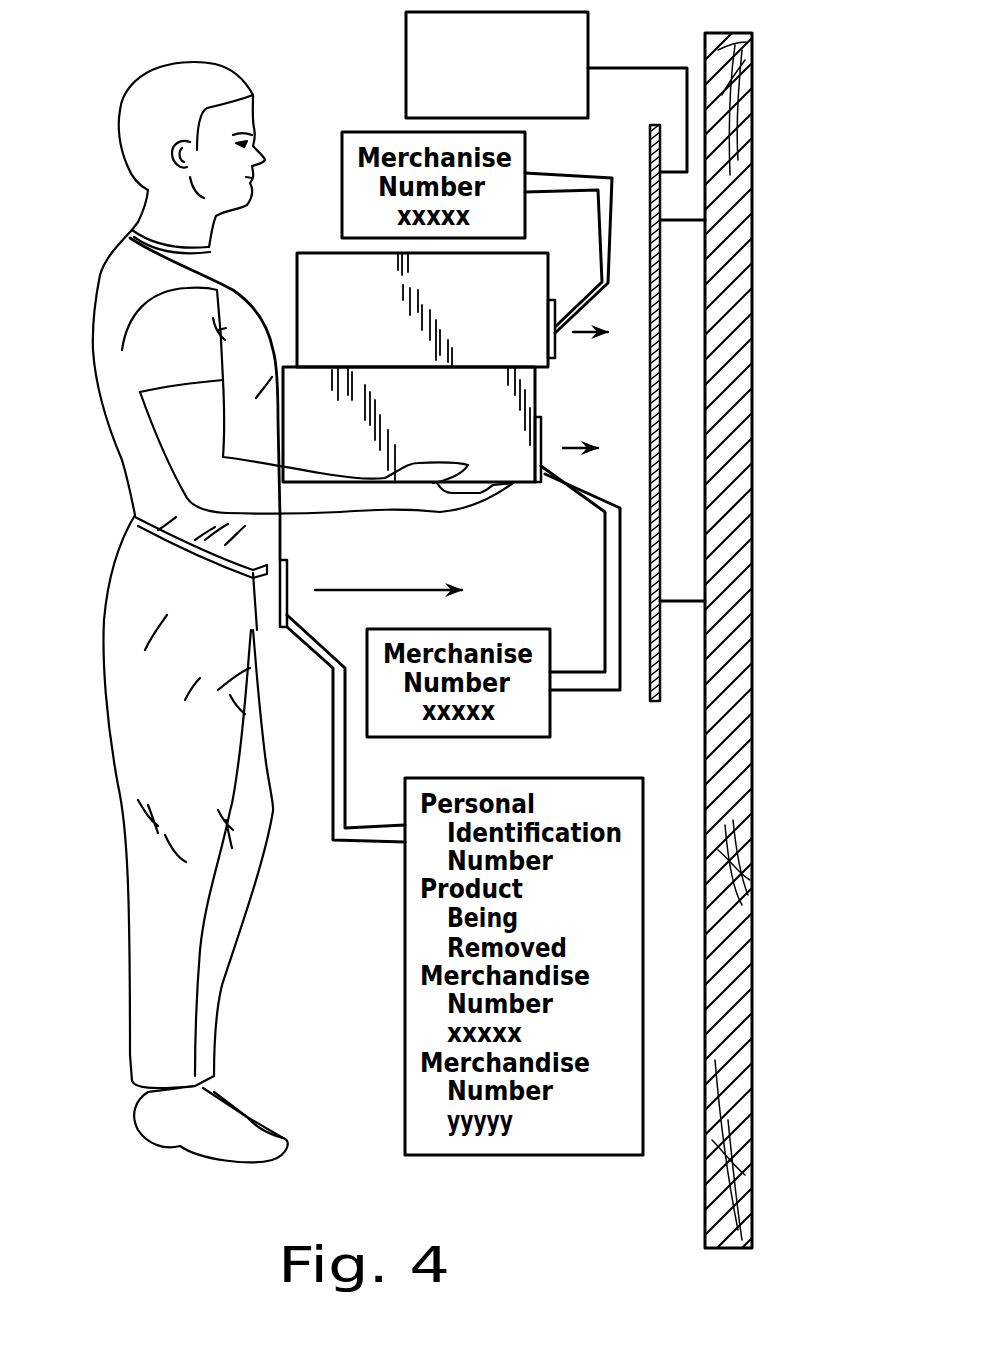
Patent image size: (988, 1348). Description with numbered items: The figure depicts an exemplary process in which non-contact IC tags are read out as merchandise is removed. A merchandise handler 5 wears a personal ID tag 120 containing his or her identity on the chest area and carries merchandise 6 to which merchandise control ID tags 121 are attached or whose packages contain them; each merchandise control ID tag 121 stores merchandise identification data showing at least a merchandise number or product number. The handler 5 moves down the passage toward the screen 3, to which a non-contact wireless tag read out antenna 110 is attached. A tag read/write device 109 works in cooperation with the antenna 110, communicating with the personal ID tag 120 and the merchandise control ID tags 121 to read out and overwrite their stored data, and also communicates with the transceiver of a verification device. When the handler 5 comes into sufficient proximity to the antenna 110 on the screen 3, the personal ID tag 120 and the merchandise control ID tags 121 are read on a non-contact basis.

The screen 3 is at (755, 997).
The handler 5 is at (106, 264).
The merchandise 6 is at (497, 321).
The tag read/write device 109 is at (406, 55).
The tag read out antenna 110 is at (650, 162).
The personal ID tag 120 is at (287, 580).
The merchandise control ID tag 121 is at (556, 354).